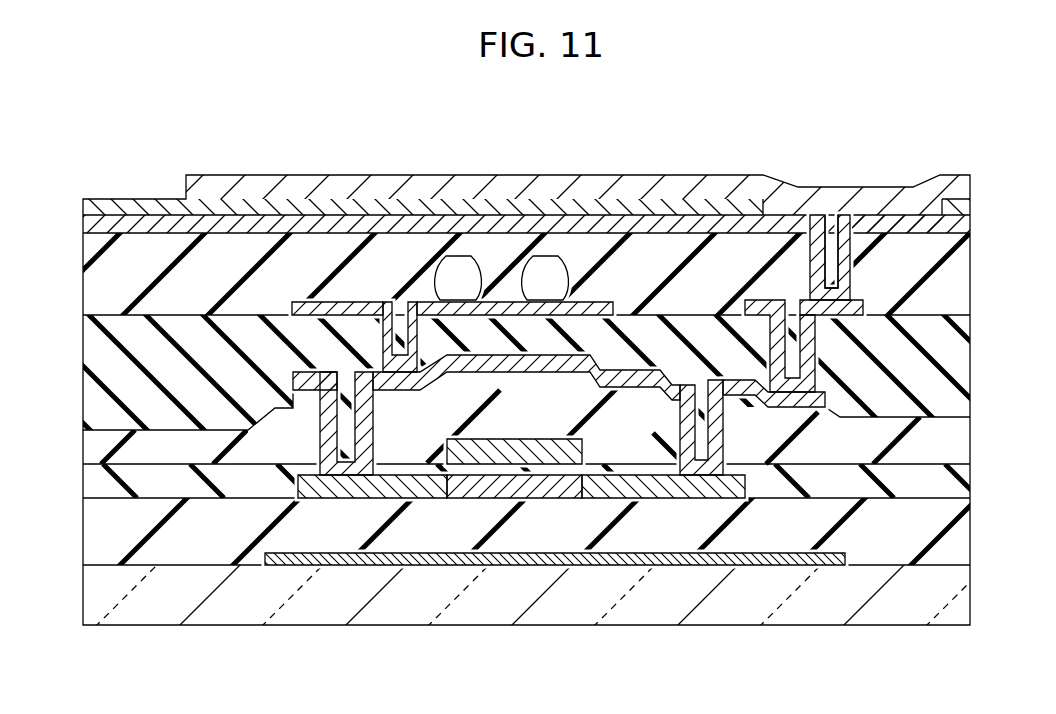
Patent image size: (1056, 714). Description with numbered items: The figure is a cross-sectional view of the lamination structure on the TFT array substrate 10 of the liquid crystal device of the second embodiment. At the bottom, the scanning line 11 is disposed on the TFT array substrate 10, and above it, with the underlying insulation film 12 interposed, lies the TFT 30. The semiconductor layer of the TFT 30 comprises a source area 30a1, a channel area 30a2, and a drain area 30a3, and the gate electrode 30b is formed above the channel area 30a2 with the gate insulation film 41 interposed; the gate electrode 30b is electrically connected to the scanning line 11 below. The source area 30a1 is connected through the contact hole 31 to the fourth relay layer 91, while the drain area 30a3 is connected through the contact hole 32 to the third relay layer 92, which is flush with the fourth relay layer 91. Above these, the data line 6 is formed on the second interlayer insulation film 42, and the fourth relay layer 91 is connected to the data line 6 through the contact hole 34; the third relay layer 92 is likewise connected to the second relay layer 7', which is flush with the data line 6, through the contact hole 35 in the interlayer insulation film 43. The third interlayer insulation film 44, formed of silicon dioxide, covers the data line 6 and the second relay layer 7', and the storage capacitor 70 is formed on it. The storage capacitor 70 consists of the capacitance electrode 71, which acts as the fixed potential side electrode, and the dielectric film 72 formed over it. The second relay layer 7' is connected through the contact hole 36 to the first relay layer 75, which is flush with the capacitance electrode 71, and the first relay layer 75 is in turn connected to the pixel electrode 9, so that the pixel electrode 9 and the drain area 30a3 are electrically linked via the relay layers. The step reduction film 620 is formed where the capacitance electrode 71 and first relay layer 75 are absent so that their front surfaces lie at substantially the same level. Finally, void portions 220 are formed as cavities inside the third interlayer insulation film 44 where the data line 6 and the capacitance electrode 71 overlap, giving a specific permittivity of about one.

The storage capacitor 70 is at (526, 152).
The dielectric film 72 is at (225, 111).
The capacitance electrode 71 is at (202, 227).
The pixel electrode 9 is at (625, 191).
The void portion 220 is at (443, 277).
The step reduction film 620 is at (773, 209).
The first relay layer 75 is at (877, 225).
The contact hole 36 is at (812, 262).
The second relay layer 7' is at (840, 280).
The third interlayer insulation film 44 is at (946, 271).
The interlayer insulation film 43 is at (948, 363).
The second interlayer insulation film 42 is at (946, 441).
The gate insulation film 41 is at (948, 481).
The underlying insulation film 12 is at (946, 540).
The TFT array substrate 10 is at (946, 601).
The data line 6 is at (303, 304).
The contact hole 34 is at (381, 331).
The contact hole 35 is at (775, 341).
The third relay layer 92 is at (826, 392).
The fourth relay layer 91 is at (291, 379).
The contact hole 31 is at (322, 433).
The contact hole 32 is at (716, 425).
The gate electrode 30b is at (527, 444).
The TFT 30 is at (506, 586).
The source area 30a1 is at (377, 493).
The channel area 30a2 is at (517, 493).
The drain area 30a3 is at (652, 493).
The scanning line 11 is at (768, 563).